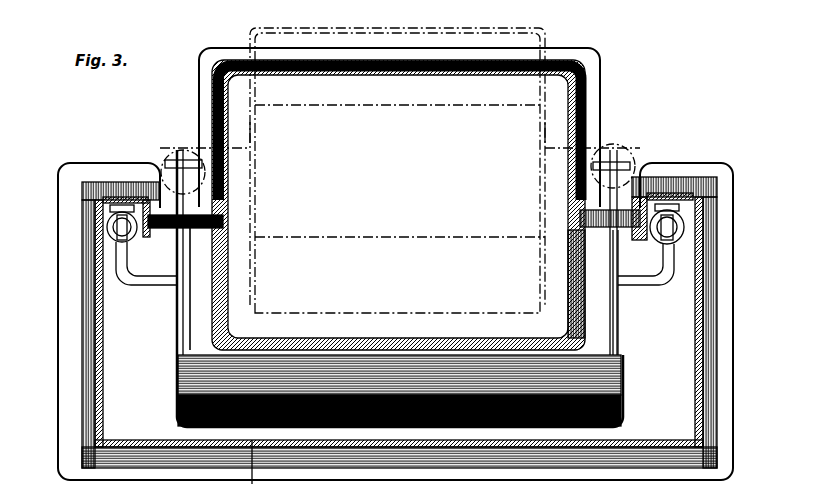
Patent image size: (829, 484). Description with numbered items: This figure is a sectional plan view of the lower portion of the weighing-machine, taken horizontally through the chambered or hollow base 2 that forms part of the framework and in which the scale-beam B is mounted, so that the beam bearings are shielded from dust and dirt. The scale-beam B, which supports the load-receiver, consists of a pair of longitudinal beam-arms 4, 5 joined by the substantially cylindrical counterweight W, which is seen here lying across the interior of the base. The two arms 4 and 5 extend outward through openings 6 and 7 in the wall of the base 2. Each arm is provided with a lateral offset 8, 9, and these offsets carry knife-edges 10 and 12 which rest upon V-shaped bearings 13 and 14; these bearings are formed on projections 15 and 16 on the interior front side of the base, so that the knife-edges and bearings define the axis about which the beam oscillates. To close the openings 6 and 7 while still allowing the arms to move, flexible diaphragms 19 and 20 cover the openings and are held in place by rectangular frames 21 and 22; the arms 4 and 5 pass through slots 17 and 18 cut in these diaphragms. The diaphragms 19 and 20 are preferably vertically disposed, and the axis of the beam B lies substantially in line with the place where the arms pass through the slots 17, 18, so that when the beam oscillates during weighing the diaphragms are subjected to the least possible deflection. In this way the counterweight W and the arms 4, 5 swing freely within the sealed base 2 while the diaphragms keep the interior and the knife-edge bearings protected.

The chambered base 2 is at (395, 321).
The beam-arm 4 is at (188, 320).
The beam-arm 5 is at (618, 312).
The opening 6 is at (170, 232).
The opening 7 is at (645, 185).
The lateral offset 8 is at (140, 281).
The lateral offset 9 is at (666, 262).
The knife-edge 10 is at (107, 231).
The knife-edge 12 is at (685, 224).
The V-shaped bearing 13 is at (106, 222).
The V-shaped bearing 14 is at (684, 236).
The projection 15 is at (108, 208).
The projection 16 is at (670, 205).
The slot 17 is at (190, 240).
The slot 18 is at (605, 240).
The flexible diaphragm 19 is at (222, 215).
The flexible diaphragm 20 is at (577, 236).
The rectangular frame 21 is at (180, 213).
The rectangular frame 22 is at (580, 215).
The scale-beam B is at (187, 337).
The counterweight W is at (625, 390).